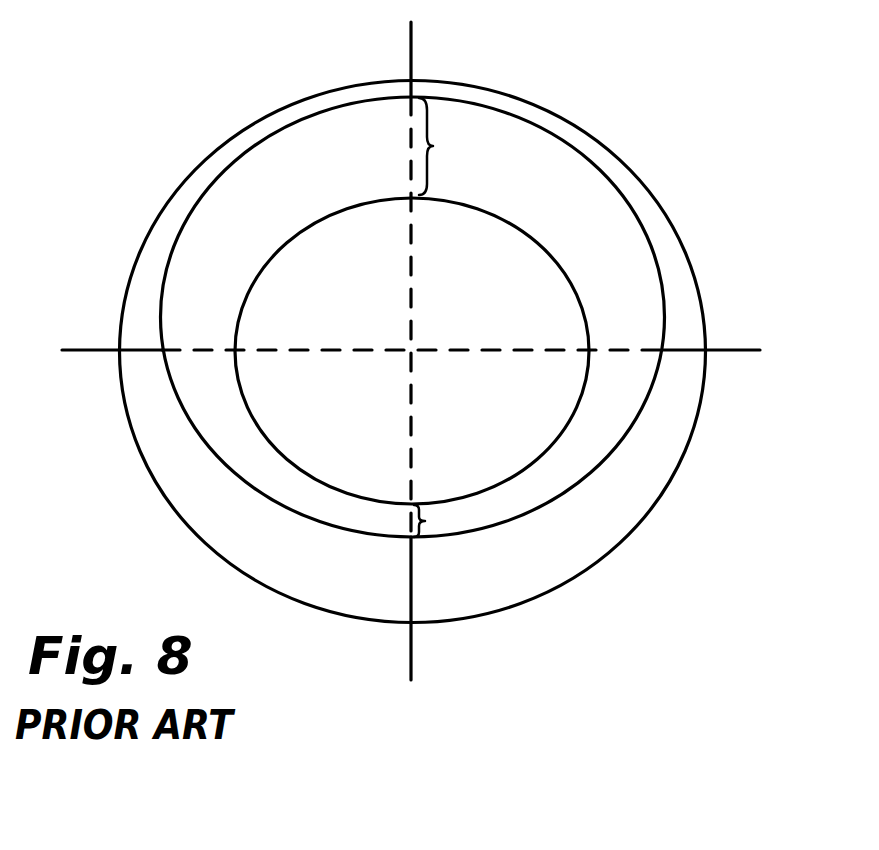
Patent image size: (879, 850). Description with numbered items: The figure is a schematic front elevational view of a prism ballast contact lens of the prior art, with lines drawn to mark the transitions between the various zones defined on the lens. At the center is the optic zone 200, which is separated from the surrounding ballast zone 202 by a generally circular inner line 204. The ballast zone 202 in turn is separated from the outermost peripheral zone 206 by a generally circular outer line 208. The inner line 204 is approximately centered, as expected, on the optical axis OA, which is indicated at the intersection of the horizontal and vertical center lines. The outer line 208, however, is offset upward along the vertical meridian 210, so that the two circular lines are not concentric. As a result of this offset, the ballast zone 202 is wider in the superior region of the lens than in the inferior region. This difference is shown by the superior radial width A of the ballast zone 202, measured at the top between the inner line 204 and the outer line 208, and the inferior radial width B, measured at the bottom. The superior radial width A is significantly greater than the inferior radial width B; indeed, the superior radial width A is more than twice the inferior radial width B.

The optic zone 200 is at (360, 279).
The ballast zone 202 is at (240, 279).
The inner line 204 is at (298, 234).
The peripheral zone 206 is at (218, 520).
The outer line 208 is at (161, 310).
The vertical meridian 210 is at (413, 54).
The optical axis OA is at (411, 350).
The superior radial width A is at (442, 146).
The inferior radial width B is at (437, 521).